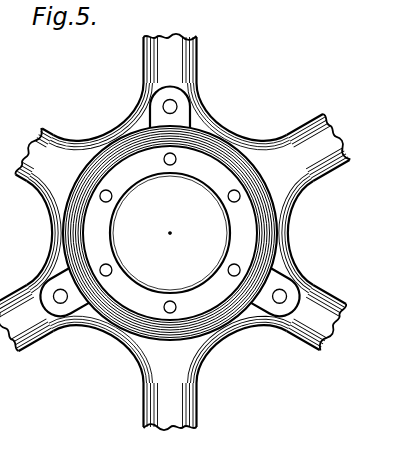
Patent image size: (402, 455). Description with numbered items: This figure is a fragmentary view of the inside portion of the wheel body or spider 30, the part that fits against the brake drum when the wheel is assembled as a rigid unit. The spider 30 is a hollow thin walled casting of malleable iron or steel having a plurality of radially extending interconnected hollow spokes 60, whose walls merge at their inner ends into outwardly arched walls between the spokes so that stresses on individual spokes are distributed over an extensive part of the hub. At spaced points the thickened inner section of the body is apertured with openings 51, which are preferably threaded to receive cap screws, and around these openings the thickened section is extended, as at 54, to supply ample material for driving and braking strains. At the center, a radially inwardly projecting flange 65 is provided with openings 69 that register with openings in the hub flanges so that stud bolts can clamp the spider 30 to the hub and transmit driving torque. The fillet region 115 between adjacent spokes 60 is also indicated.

The wheel body or spider 30 is at (172, 37).
The openings 51 is at (178, 107).
The extended thickened section 54 is at (157, 92).
The hollow spokes 60 is at (43, 137).
The radially inwardly projecting flange 65 is at (163, 292).
The openings 69 is at (227, 198).
The fillet web 115 is at (229, 137).